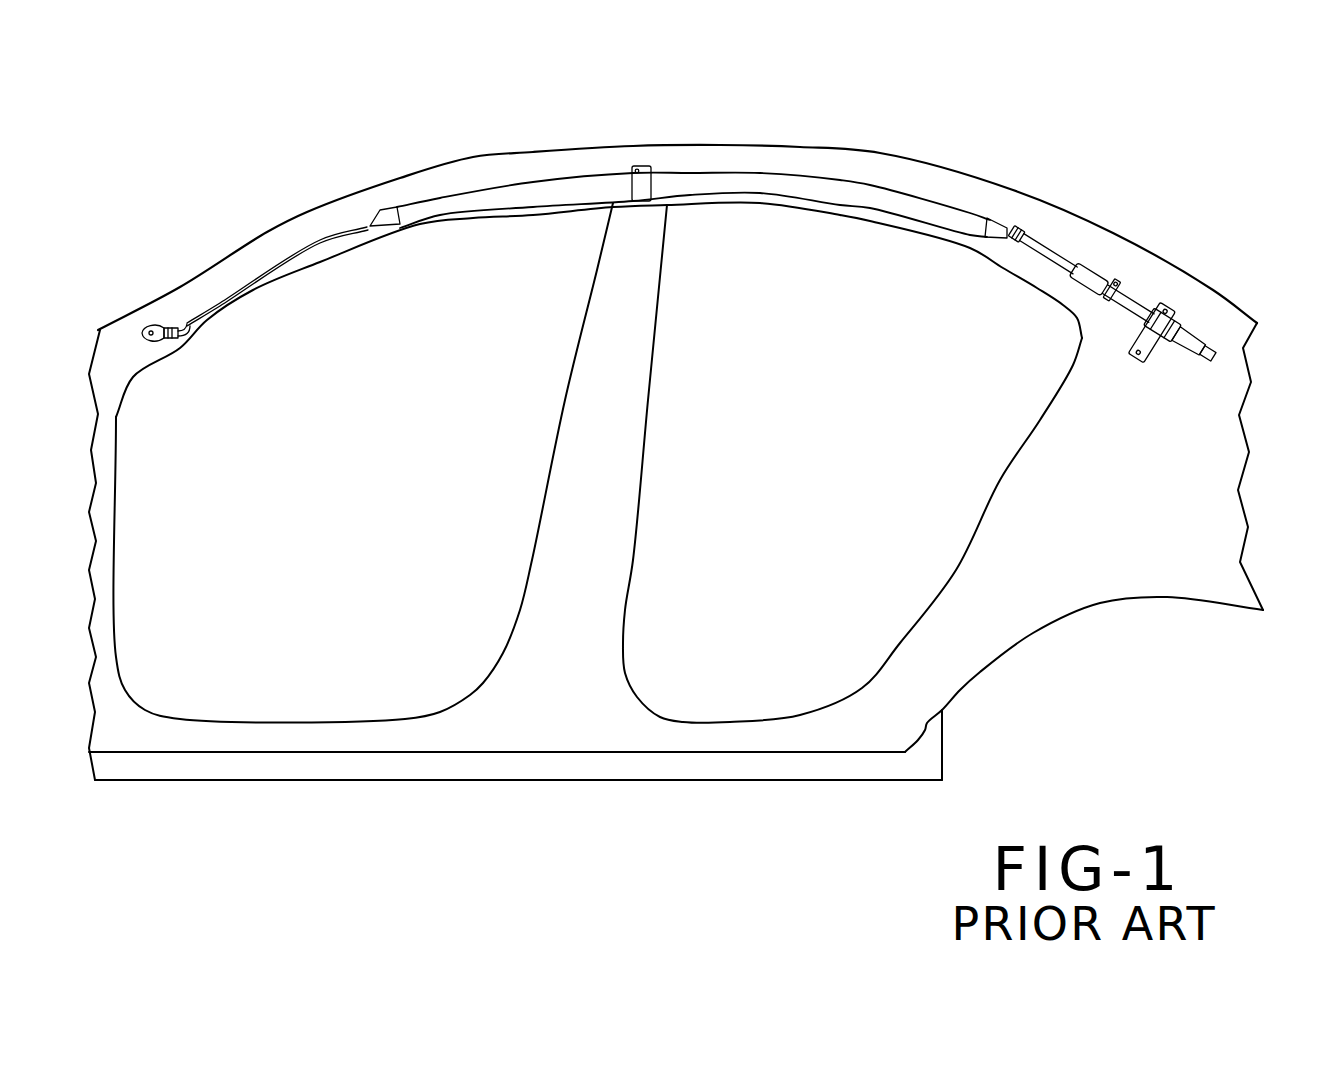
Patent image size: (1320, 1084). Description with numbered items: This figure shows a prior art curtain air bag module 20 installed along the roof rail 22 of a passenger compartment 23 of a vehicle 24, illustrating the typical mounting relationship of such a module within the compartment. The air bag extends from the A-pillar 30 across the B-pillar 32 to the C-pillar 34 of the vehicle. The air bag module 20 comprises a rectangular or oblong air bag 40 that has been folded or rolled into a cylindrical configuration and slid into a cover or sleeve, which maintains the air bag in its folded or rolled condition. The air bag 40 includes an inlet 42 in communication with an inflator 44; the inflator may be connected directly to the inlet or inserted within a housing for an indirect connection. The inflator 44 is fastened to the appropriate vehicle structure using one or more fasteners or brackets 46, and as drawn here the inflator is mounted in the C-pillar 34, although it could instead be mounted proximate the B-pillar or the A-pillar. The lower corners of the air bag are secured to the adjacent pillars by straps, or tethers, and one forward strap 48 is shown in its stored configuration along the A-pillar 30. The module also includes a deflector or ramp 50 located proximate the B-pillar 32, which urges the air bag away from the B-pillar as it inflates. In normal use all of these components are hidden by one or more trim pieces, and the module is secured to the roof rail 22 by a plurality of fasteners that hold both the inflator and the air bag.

The curtain air bag module 20 is at (724, 276).
The roof rail 22 is at (302, 212).
The passenger compartment 23 is at (747, 622).
The vehicle 24 is at (1017, 643).
The A-pillar 30 is at (178, 290).
The B-pillar 32 is at (640, 368).
The C-pillar 34 is at (1092, 276).
The air bag 40 is at (602, 190).
The inlet 42 is at (997, 230).
The inflator 44 is at (1127, 302).
The brackets 46 is at (1115, 272).
The forward strap 48 is at (280, 267).
The deflector or ramp 50 is at (650, 185).